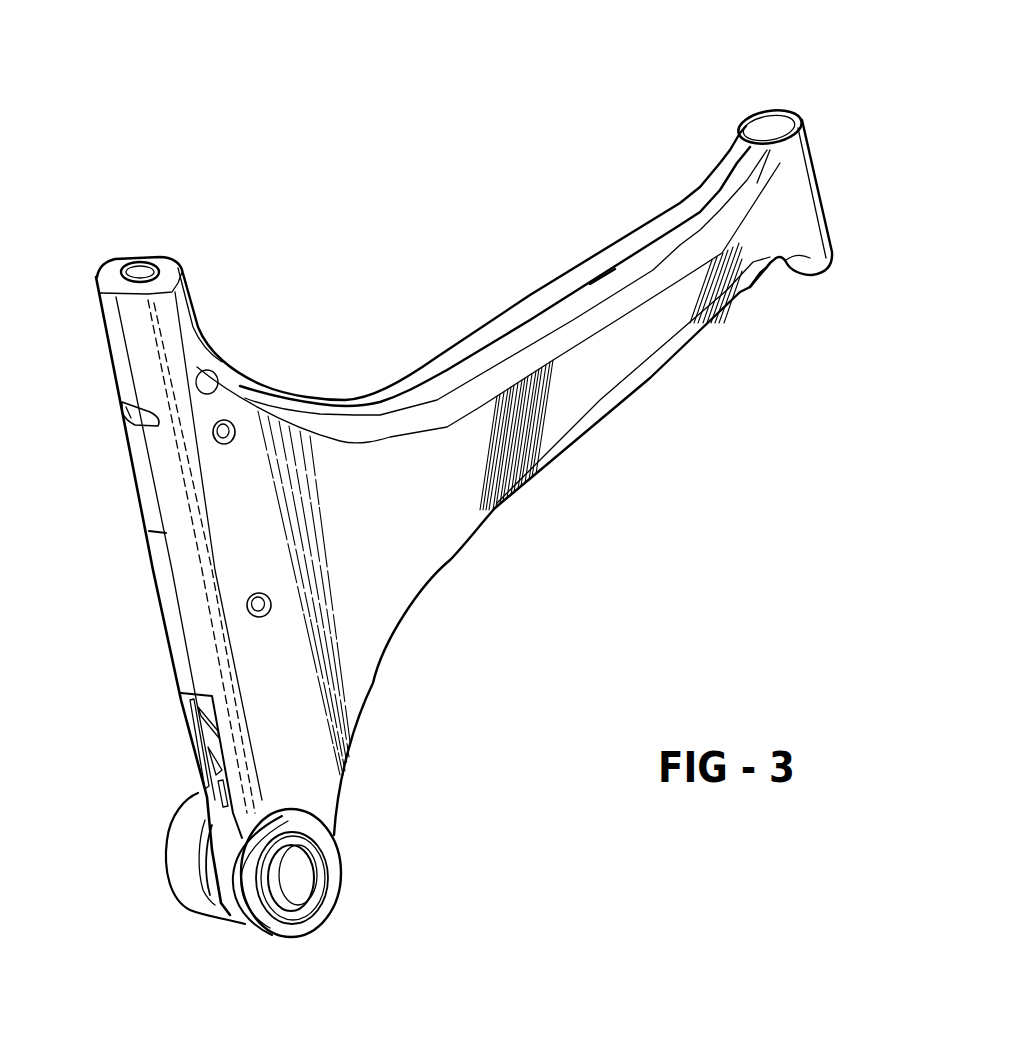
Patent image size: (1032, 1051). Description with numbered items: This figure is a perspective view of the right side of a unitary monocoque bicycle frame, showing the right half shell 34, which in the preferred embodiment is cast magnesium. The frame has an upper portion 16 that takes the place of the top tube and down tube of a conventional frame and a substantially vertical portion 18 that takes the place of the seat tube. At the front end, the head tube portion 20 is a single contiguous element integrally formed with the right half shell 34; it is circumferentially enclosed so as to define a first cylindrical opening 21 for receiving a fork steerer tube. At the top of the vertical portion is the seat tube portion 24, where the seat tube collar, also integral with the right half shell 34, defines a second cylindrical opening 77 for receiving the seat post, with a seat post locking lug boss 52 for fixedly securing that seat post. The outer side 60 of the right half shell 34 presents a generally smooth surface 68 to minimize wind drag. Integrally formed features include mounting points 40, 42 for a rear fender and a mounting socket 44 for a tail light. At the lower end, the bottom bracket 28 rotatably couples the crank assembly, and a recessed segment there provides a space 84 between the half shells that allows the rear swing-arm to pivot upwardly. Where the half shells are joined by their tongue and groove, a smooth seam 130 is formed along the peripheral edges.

The upper portion 16 is at (537, 310).
The substantially vertical portion 18 is at (158, 580).
The head tube portion 20 is at (820, 184).
The first cylindrical opening 21 is at (762, 130).
The seat tube portion 24 is at (128, 335).
The bottom bracket 28 is at (343, 868).
The right half shell 34 is at (652, 378).
The mounting point 40 is at (214, 437).
The mounting point 42 is at (247, 607).
The mounting socket 44 is at (126, 424).
The seat post locking lug boss 52 is at (212, 382).
The outer side 60 is at (423, 553).
The smooth surface 68 is at (624, 373).
The second cylindrical opening 77 is at (143, 275).
The space 84 is at (196, 758).
The smooth seam 130 is at (605, 278).